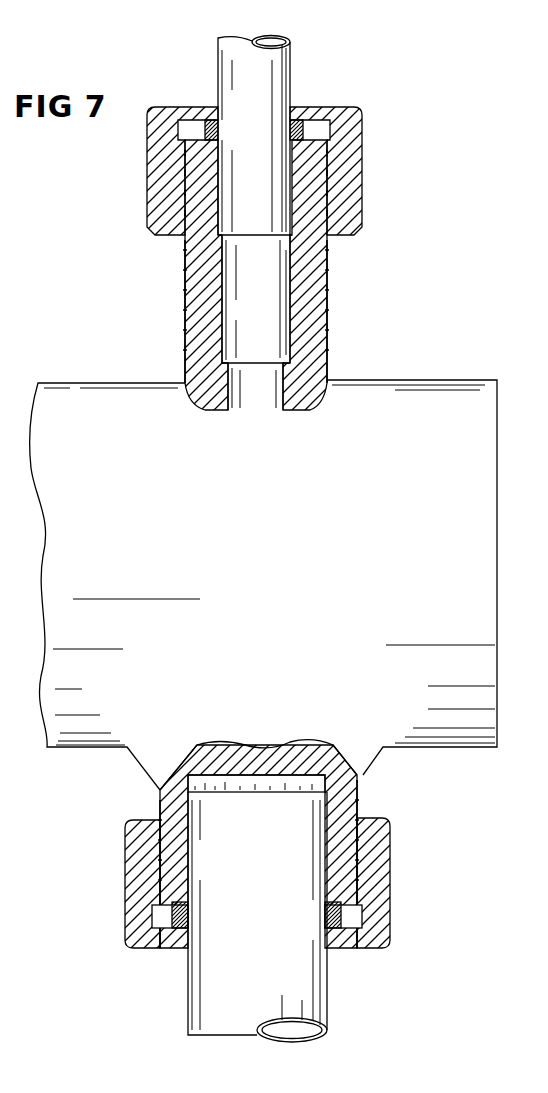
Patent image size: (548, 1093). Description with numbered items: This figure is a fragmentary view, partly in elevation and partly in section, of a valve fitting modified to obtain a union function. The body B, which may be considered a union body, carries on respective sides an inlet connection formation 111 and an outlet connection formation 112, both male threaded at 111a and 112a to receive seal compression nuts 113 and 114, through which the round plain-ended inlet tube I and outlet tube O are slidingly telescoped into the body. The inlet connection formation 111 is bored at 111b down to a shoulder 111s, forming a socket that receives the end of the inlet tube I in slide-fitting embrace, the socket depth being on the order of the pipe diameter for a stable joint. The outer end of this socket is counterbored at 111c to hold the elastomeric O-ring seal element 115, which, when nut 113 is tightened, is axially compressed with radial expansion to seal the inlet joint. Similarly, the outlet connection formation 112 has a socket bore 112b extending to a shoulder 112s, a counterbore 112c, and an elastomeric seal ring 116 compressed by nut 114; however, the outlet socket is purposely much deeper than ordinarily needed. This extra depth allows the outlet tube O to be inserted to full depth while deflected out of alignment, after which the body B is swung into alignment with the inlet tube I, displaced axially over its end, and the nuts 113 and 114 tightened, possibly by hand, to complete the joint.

The inlet connection formation 111 is at (154, 798).
The male thread of inlet connection formation 111a is at (348, 812).
The bore of inlet connection formation 111b is at (360, 793).
The counterbore of inlet socket 111c is at (172, 906).
The shoulder of inlet socket 111s is at (270, 796).
The outlet connection formation 112 is at (178, 332).
The male thread of outlet connection formation 112a is at (322, 260).
The socket bore of outlet connection formation 112b is at (222, 270).
The counterbore of outlet socket 112c is at (204, 138).
The shoulder of outlet socket 112s is at (283, 364).
The seal compression nut 113 is at (390, 878).
The seal compression nut 114 is at (362, 150).
The O-ring seal element 115 is at (332, 947).
The elastomeric seal ring 116 is at (290, 118).
The body B is at (86, 376).
The inlet tube I is at (180, 992).
The outlet tube O is at (292, 62).